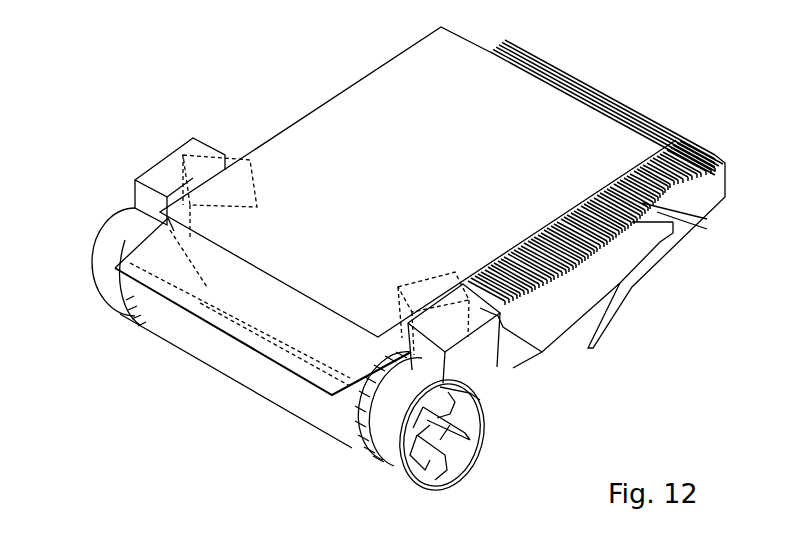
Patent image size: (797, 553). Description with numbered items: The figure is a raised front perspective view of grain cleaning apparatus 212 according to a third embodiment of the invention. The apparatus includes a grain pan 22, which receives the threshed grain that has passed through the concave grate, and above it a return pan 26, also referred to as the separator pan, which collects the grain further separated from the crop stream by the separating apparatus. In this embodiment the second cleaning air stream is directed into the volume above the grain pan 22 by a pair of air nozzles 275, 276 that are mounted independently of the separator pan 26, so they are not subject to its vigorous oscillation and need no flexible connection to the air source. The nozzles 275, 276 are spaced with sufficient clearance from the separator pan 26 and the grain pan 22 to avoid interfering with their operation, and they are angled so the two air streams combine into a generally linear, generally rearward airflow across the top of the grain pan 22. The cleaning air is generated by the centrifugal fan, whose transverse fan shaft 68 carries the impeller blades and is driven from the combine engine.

The grain cleaning apparatus 212 is at (82, 89).
The return pan 26 is at (340, 92).
The grain pan 22 is at (235, 342).
The fan shaft 68 is at (443, 430).
The air nozzle 275 is at (238, 168).
The air nozzle 276 is at (438, 282).